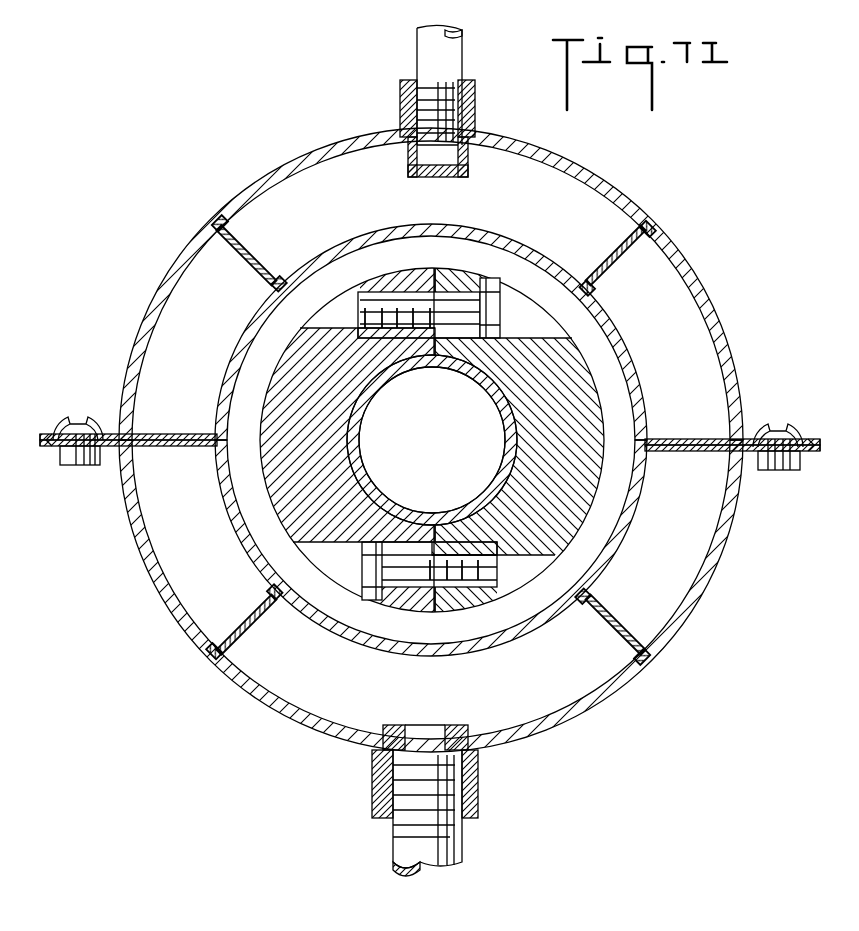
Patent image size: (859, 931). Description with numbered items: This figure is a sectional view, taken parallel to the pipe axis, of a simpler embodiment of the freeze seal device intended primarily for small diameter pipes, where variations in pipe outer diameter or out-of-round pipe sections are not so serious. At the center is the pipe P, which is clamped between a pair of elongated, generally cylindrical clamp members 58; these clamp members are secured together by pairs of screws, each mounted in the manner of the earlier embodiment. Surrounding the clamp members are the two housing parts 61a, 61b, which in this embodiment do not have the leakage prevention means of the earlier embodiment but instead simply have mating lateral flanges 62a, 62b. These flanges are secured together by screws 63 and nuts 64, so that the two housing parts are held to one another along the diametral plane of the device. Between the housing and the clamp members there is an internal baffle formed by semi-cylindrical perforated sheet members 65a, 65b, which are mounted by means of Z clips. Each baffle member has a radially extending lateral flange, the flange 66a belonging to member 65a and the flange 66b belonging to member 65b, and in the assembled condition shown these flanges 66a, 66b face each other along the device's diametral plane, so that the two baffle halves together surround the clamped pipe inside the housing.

The clamp member 58 is at (297, 353).
The central bore P is at (497, 472).
The housing part 61a is at (632, 200).
The housing part 61b is at (618, 680).
The perforated sheet member 65a is at (647, 386).
The perforated sheet member 65b is at (634, 506).
The lateral flange 66a is at (182, 433).
The lateral flange 66b is at (183, 447).
The lateral flange 62a is at (42, 432).
The lateral flange 62b is at (45, 450).
The screw 63 is at (86, 425).
The nut 64 is at (94, 470).